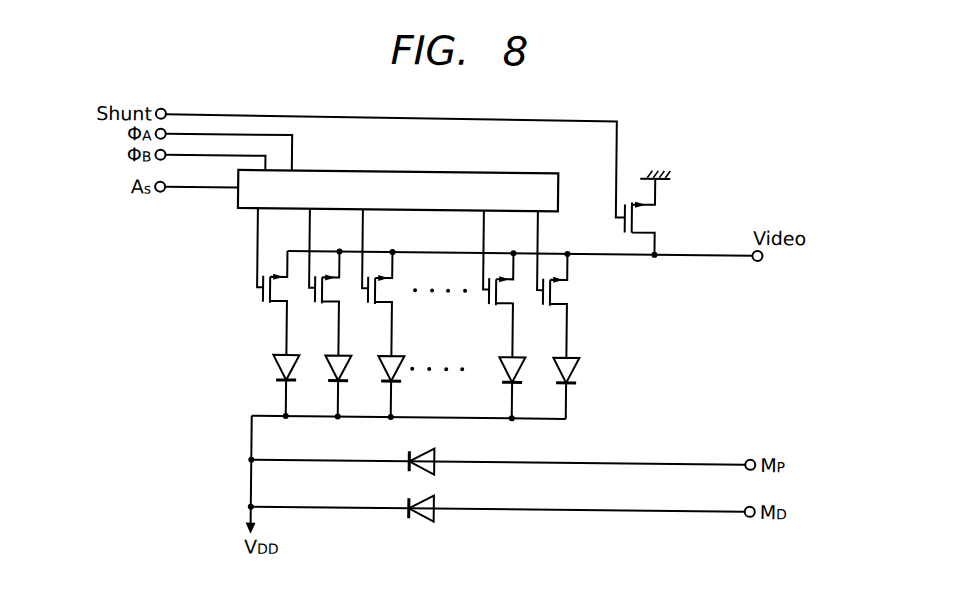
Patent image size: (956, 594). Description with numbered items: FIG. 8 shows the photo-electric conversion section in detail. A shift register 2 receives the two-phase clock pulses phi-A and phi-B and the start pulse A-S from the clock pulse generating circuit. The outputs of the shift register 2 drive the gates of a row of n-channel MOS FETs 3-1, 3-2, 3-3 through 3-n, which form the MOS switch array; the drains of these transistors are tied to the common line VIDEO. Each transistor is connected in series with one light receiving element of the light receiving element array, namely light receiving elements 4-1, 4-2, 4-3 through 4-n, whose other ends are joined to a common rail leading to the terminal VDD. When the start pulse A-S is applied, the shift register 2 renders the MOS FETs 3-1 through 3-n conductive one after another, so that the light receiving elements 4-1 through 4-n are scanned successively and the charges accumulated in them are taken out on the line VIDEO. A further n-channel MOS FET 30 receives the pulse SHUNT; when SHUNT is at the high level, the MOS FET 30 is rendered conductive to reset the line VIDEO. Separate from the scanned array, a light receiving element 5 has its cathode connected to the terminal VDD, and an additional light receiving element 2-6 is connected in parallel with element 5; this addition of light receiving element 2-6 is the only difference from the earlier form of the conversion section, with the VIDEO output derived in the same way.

The shift register 2 is at (418, 172).
The n-channel MOS FET 3-1 is at (265, 305).
The n-channel MOS FET 3-2 is at (321, 305).
The n-channel MOS FET 3-3 is at (371, 305).
The n-channel MOS FET 3-n is at (545, 305).
The light receiving element 4-1 is at (283, 368).
The light receiving element 4-2 is at (331, 370).
The light receiving element 4-3 is at (383, 370).
The light receiving element 4-n is at (560, 369).
The light receiving element 5 is at (435, 455).
The light receiving element 2-6 is at (422, 517).
The n-channel MOS FET 30 is at (648, 217).